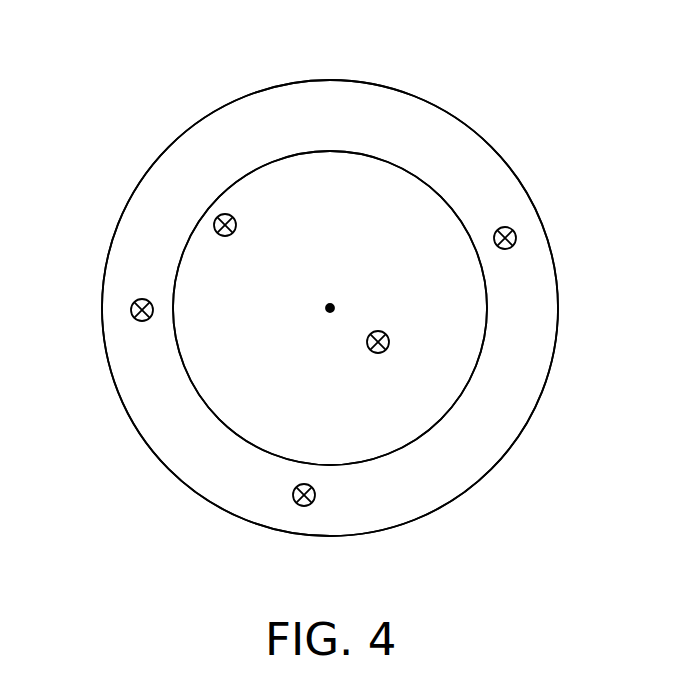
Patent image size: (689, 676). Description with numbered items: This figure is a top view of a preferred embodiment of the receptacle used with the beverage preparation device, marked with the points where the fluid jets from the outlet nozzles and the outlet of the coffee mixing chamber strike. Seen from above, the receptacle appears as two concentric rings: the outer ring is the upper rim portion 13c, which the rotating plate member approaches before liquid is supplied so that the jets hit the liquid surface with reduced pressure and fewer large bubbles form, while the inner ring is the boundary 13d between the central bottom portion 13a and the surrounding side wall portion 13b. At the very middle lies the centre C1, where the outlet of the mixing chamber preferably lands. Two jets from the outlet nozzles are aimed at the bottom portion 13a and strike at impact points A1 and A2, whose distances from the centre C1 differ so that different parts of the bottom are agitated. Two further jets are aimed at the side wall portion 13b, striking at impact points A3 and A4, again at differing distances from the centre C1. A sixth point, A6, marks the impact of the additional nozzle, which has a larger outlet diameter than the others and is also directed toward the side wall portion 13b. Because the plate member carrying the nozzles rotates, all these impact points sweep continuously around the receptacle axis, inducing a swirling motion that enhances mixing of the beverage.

The bottom portion 13a is at (413, 410).
The side wall portion 13b is at (545, 271).
The upper rim portion 13c is at (400, 88).
The inner boundary circle 13d is at (487, 313).
The impact point A1 is at (217, 217).
The impact point A2 is at (389, 342).
The impact point A3 is at (514, 230).
The impact point A4 is at (300, 506).
The impact point of the additional nozzle A6 is at (131, 313).
The centre C1 is at (330, 308).